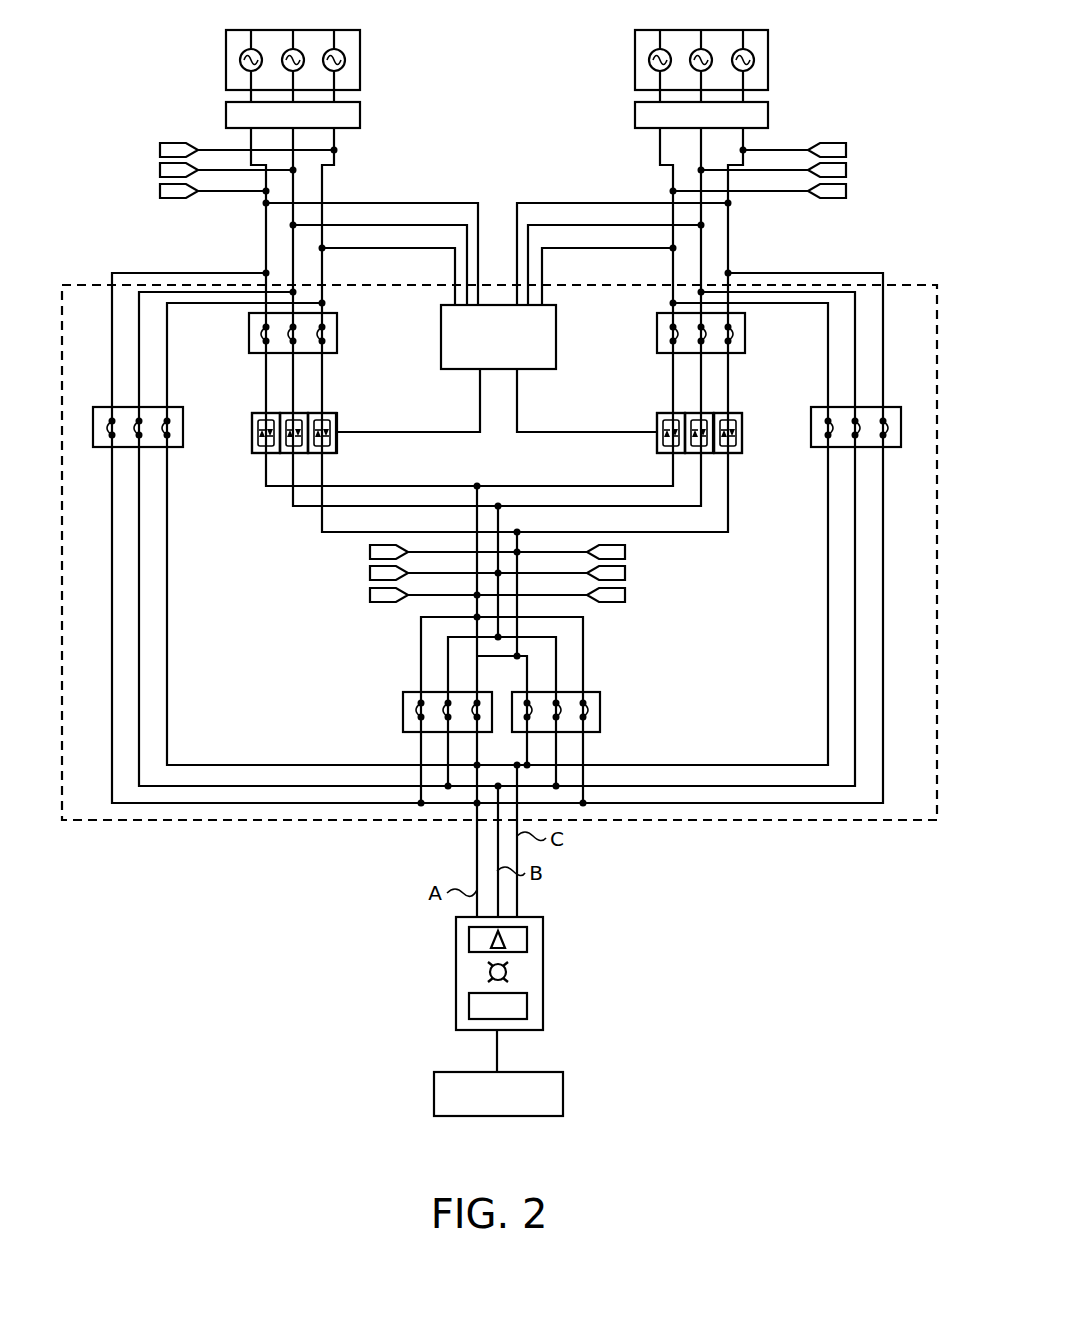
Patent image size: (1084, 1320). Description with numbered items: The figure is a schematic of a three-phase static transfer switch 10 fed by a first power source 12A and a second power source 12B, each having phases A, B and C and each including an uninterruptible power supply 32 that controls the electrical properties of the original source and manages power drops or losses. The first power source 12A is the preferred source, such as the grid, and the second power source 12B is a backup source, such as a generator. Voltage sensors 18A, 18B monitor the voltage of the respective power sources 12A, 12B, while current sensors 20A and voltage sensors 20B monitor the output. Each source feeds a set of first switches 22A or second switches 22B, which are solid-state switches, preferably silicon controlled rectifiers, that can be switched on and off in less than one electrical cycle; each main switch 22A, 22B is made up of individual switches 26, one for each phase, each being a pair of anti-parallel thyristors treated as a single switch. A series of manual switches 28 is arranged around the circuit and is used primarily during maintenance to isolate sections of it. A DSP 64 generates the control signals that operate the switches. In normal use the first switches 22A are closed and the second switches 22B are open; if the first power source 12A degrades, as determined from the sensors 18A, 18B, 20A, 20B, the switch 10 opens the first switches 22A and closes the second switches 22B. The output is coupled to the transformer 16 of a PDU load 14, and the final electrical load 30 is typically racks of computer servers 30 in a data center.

The static transfer switch 10 is at (100, 285).
The first power source 12A is at (226, 32).
The second power source 12B is at (768, 32).
The load 14 is at (543, 932).
The transformer 16 is at (527, 1004).
The voltage sensor 18A is at (160, 148).
The voltage sensor 18B is at (848, 148).
The current sensor 20A is at (625, 550).
The voltage sensor 20B is at (370, 550).
The first switch 22A is at (241, 459).
The second switch 22B is at (757, 459).
The switch 26 is at (497, 407).
The manual switch 28 is at (496, 520).
The servers 30 is at (563, 1083).
The uninterruptible power supply 32 is at (226, 103).
The DSP 64 is at (548, 370).